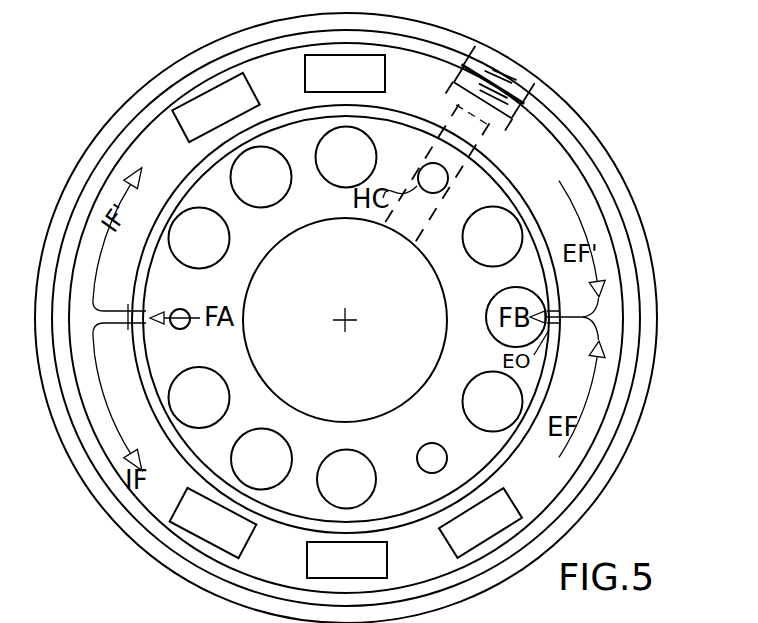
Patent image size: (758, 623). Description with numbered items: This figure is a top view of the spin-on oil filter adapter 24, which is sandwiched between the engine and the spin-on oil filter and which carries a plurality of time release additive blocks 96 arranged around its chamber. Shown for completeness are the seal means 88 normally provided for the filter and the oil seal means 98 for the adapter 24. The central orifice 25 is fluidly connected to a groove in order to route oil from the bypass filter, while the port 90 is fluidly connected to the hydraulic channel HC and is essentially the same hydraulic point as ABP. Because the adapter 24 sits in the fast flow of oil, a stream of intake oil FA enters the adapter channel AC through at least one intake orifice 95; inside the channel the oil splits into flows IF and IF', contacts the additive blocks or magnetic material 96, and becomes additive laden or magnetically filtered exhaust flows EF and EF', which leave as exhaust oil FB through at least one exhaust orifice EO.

The adapter 24 is at (657, 344).
The orifice 25 is at (402, 240).
The seal means 88 is at (443, 207).
The port 90 is at (520, 57).
The intake orifice 95 is at (141, 323).
The time release additive blocks 96 is at (346, 316).
The oil seal means 98 is at (578, 468).